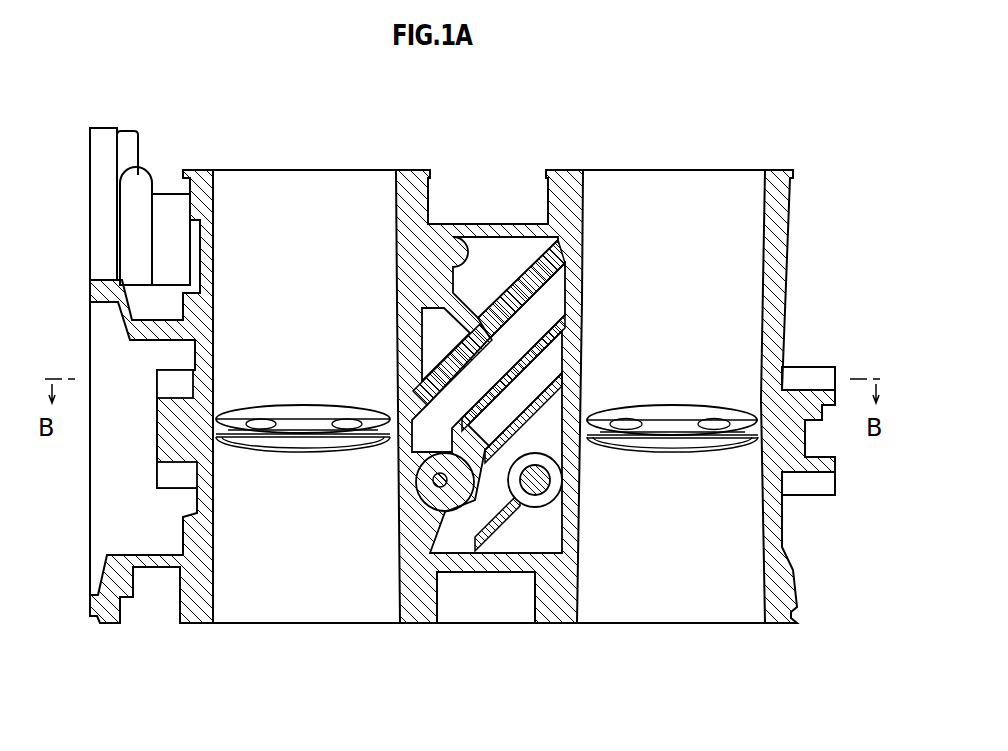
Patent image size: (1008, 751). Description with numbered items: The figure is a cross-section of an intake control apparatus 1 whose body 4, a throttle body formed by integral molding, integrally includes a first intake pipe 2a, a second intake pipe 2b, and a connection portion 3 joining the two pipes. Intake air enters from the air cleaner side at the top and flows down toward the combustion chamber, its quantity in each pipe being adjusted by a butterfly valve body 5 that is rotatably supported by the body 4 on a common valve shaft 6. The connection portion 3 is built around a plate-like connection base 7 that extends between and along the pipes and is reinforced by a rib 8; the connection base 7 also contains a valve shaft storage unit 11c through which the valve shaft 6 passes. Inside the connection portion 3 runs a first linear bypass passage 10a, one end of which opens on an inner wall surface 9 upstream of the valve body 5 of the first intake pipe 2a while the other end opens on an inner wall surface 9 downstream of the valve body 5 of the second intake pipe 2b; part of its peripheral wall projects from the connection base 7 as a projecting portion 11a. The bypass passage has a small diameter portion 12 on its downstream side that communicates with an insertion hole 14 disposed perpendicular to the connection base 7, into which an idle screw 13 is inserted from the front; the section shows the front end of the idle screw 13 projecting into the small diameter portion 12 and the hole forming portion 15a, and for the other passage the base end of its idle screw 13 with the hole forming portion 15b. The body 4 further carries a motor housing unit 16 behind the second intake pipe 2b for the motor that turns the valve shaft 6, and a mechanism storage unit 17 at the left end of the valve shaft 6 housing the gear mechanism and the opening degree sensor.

The intake control apparatus 1 is at (783, 94).
The first intake pipe 2a is at (556, 170).
The second intake pipe 2b is at (195, 170).
The connection portion 3 is at (469, 212).
The body 4 is at (797, 210).
The valve body 5 is at (667, 406).
The valve shaft 6 is at (681, 422).
The connection base 7 is at (509, 258).
The rib 8 is at (500, 338).
The inner wall surface 9 is at (578, 207).
The first linear bypass passage 10a is at (585, 405).
The projecting portion 11a is at (584, 465).
The valve shaft storage unit 11c is at (433, 416).
The small diameter portion 12 is at (410, 545).
The idle screw 13 is at (433, 481).
The insertion hole 14 is at (485, 512).
The hole forming portion 15a is at (440, 487).
The hole forming portion 15b is at (540, 512).
The motor housing unit 16 is at (170, 193).
The mechanism storage unit 17 is at (122, 507).